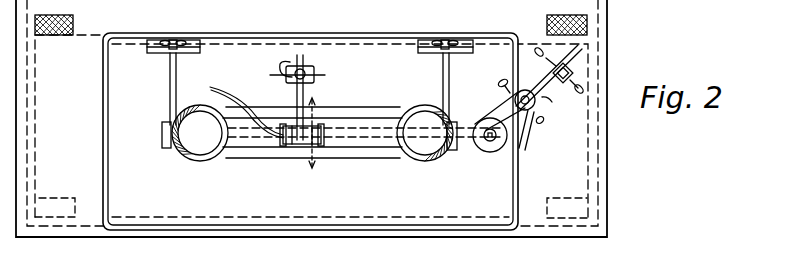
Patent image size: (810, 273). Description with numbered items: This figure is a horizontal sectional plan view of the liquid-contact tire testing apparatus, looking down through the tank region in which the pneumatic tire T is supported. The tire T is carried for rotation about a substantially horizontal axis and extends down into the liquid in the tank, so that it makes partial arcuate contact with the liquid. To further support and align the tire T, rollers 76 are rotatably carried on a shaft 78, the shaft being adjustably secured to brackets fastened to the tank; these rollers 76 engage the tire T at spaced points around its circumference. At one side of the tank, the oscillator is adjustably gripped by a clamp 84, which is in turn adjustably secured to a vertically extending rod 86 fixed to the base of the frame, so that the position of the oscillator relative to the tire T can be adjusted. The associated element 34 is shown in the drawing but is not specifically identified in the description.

The valve 34 is at (290, 146).
The rollers 76 is at (163, 140).
The shaft 78 is at (170, 93).
The clamp 84 is at (520, 126).
The vertically extending rod 86 is at (572, 73).
The pneumatic tire T is at (197, 162).